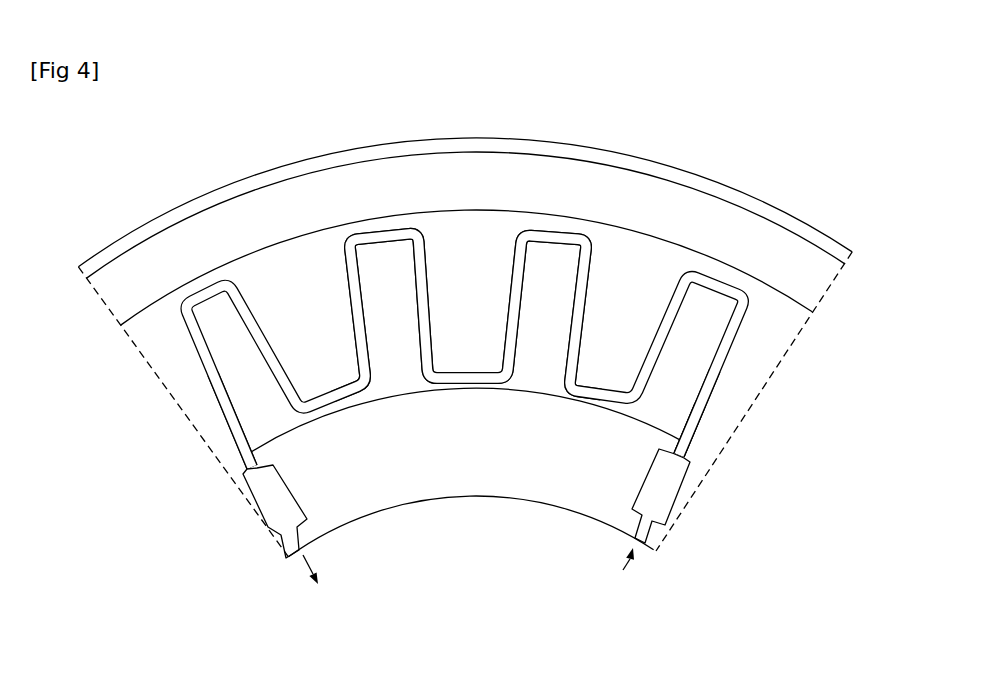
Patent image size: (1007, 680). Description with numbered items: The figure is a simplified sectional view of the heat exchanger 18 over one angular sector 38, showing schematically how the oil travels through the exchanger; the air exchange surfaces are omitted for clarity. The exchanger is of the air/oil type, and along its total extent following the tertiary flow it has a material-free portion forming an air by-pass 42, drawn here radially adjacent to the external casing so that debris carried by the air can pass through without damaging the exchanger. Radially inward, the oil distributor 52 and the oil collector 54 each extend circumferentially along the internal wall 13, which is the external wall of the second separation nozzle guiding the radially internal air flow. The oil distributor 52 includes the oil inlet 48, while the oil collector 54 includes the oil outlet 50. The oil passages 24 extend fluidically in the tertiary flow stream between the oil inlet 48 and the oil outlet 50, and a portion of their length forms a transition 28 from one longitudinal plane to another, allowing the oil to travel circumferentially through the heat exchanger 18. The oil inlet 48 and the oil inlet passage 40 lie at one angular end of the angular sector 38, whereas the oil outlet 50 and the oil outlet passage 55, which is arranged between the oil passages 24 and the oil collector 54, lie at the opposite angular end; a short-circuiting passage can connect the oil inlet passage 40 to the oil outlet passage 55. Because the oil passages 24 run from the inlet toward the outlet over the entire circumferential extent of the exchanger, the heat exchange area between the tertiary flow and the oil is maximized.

The heat exchanger 18 is at (672, 160).
The air by-pass 42 is at (478, 198).
The angular sector 38 is at (473, 552).
The oil passages 24 is at (180, 315).
The transition 28 is at (336, 378).
The oil outlet passage 55 is at (228, 454).
The oil inlet passage 40 is at (705, 436).
The second external guide wall 13 is at (700, 448).
The oil collector 54 is at (282, 510).
The oil distributor 52 is at (667, 484).
The oil outlet 50 is at (303, 555).
The oil inlet 48 is at (623, 570).